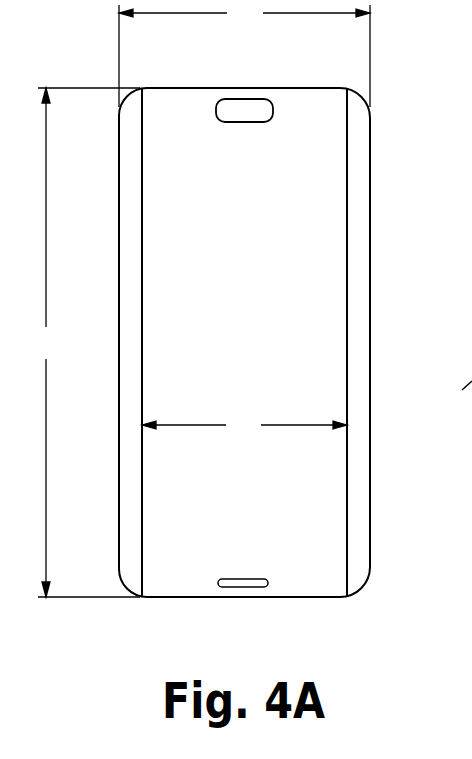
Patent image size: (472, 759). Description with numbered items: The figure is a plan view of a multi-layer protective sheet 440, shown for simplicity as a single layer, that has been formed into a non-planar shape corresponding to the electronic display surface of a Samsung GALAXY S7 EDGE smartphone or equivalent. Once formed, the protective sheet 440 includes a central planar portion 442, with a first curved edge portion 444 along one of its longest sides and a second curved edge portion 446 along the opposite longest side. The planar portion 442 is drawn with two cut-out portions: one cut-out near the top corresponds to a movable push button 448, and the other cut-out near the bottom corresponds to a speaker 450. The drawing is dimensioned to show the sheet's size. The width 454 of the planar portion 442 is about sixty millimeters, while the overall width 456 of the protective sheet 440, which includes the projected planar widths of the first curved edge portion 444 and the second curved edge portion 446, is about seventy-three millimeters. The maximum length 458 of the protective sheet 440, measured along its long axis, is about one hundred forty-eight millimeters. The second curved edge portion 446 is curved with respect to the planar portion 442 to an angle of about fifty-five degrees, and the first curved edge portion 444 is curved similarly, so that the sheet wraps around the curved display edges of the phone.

The multi-layer protective sheet 440 is at (379, 75).
The planar portion 442 is at (226, 274).
The first curved edge portion 444 is at (127, 196).
The second curved edge portion 446 is at (362, 197).
The movable push button 448 is at (244, 108).
The speaker 450 is at (243, 588).
The width 454 is at (244, 426).
The overall width 456 is at (244, 53).
The maximum length 458 is at (85, 342).